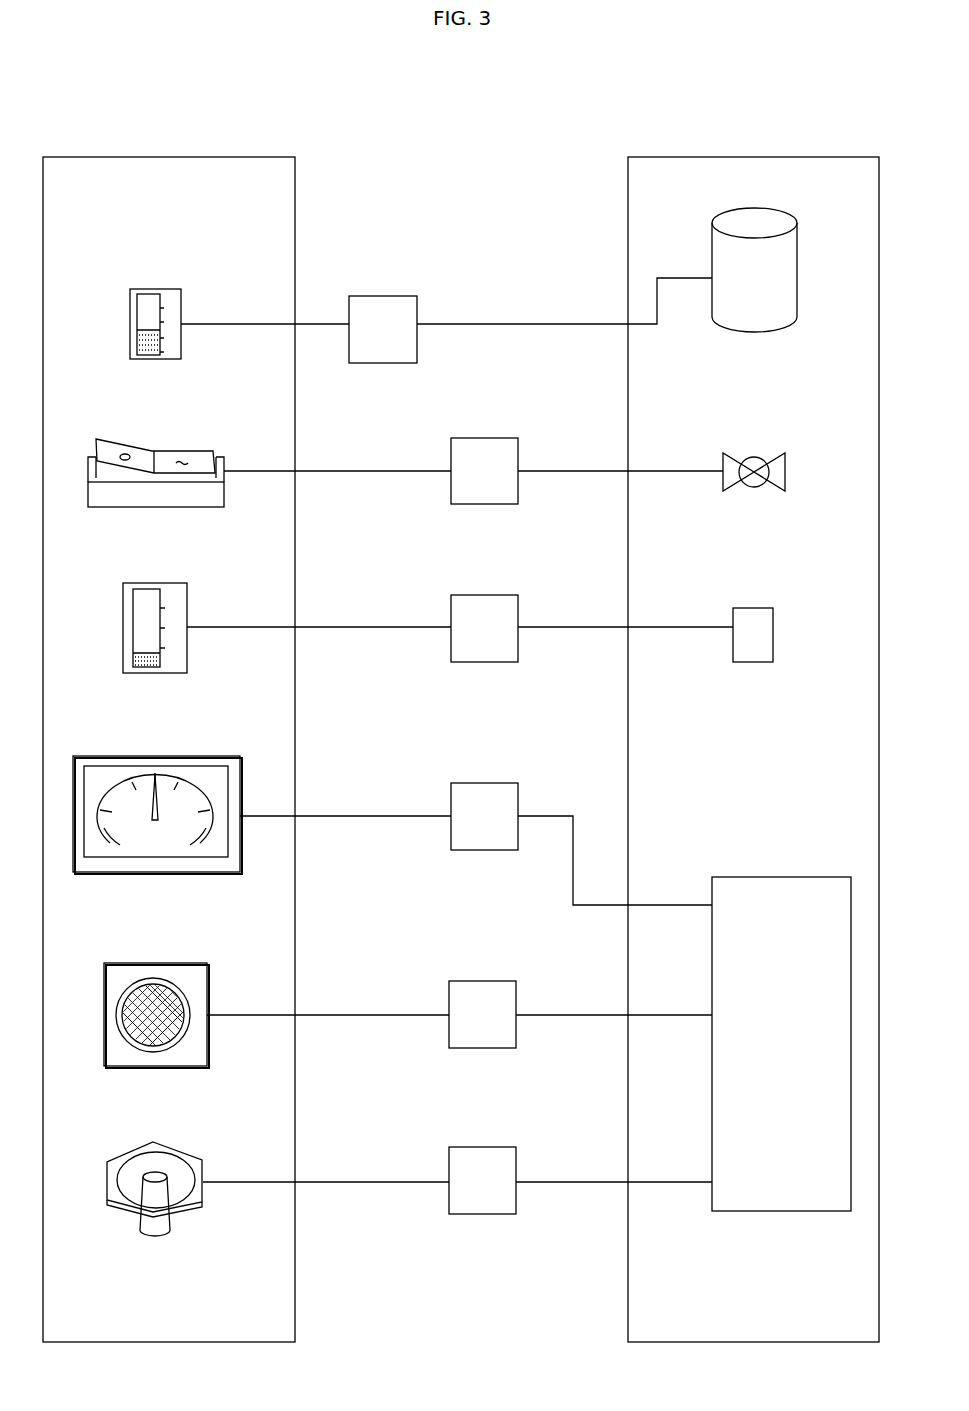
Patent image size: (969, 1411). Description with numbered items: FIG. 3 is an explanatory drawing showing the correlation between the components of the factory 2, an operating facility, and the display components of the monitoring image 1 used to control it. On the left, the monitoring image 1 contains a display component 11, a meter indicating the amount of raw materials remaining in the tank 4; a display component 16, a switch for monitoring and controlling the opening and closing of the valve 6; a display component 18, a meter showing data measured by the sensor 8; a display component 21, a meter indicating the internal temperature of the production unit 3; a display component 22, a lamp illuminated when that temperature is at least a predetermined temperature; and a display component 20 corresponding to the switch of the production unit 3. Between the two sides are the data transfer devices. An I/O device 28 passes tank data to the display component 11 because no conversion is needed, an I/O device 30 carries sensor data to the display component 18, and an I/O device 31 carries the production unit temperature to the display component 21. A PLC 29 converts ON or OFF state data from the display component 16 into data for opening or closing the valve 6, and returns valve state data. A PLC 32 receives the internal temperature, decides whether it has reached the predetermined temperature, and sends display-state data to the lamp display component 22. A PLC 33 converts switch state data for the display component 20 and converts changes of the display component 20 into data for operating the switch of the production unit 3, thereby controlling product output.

The monitoring image 1 is at (185, 157).
The factory 2 is at (745, 157).
The production unit 3 is at (820, 883).
The tank 4 is at (785, 222).
The valve 6 is at (770, 465).
The sensor 8 is at (763, 617).
The display component 11 is at (158, 289).
The display component 16 is at (195, 450).
The display component 18 is at (172, 583).
The display component 20 is at (190, 1158).
The display component 21 is at (218, 756).
The display component 22 is at (195, 963).
The I/O device 28 is at (392, 308).
The PLC 29 is at (506, 448).
The I/O device 30 is at (507, 605).
The I/O device 31 is at (507, 793).
The PLC 32 is at (500, 990).
The PLC 33 is at (503, 1157).